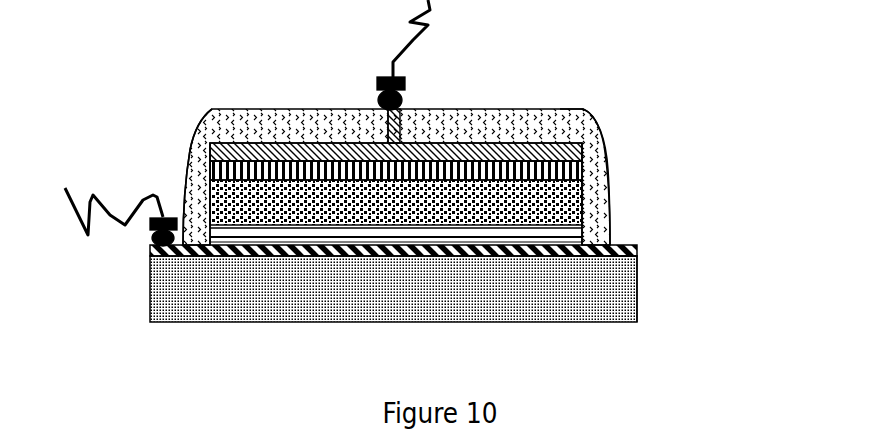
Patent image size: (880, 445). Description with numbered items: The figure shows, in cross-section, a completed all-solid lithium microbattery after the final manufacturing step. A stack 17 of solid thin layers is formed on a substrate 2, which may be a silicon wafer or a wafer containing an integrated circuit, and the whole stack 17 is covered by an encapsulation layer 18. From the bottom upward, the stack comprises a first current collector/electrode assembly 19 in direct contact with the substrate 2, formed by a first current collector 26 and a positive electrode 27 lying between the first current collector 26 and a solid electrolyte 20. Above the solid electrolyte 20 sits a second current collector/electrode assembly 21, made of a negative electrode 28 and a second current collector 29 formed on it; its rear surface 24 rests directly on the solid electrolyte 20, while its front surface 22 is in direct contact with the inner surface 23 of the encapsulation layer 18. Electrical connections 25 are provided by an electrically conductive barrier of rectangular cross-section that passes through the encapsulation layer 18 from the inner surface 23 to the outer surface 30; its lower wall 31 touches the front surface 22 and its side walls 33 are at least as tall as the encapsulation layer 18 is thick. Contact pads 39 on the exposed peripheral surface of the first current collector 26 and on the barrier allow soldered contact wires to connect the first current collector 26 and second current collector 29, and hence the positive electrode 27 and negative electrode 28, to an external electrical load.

The substrate 2 is at (223, 302).
The stack 17 is at (186, 177).
The encapsulation layer 18 is at (200, 153).
The first current collector/electrode assembly 19 is at (655, 228).
The solid electrolyte 20 is at (432, 203).
The second current collector/electrode assembly 21 is at (600, 154).
The front surface 22 is at (540, 141).
The inner surface 23 is at (212, 160).
The rear surface 24 is at (548, 182).
The electrical connections 25 is at (410, 108).
The first current collector 26 is at (560, 268).
The positive electrode 27 is at (552, 232).
The negative electrode 28 is at (285, 143).
The second current collector 29 is at (530, 108).
The outer surface 30 is at (235, 108).
The lower wall 31 is at (350, 150).
The side walls 33 is at (376, 136).
The contact pads 39 is at (390, 73).